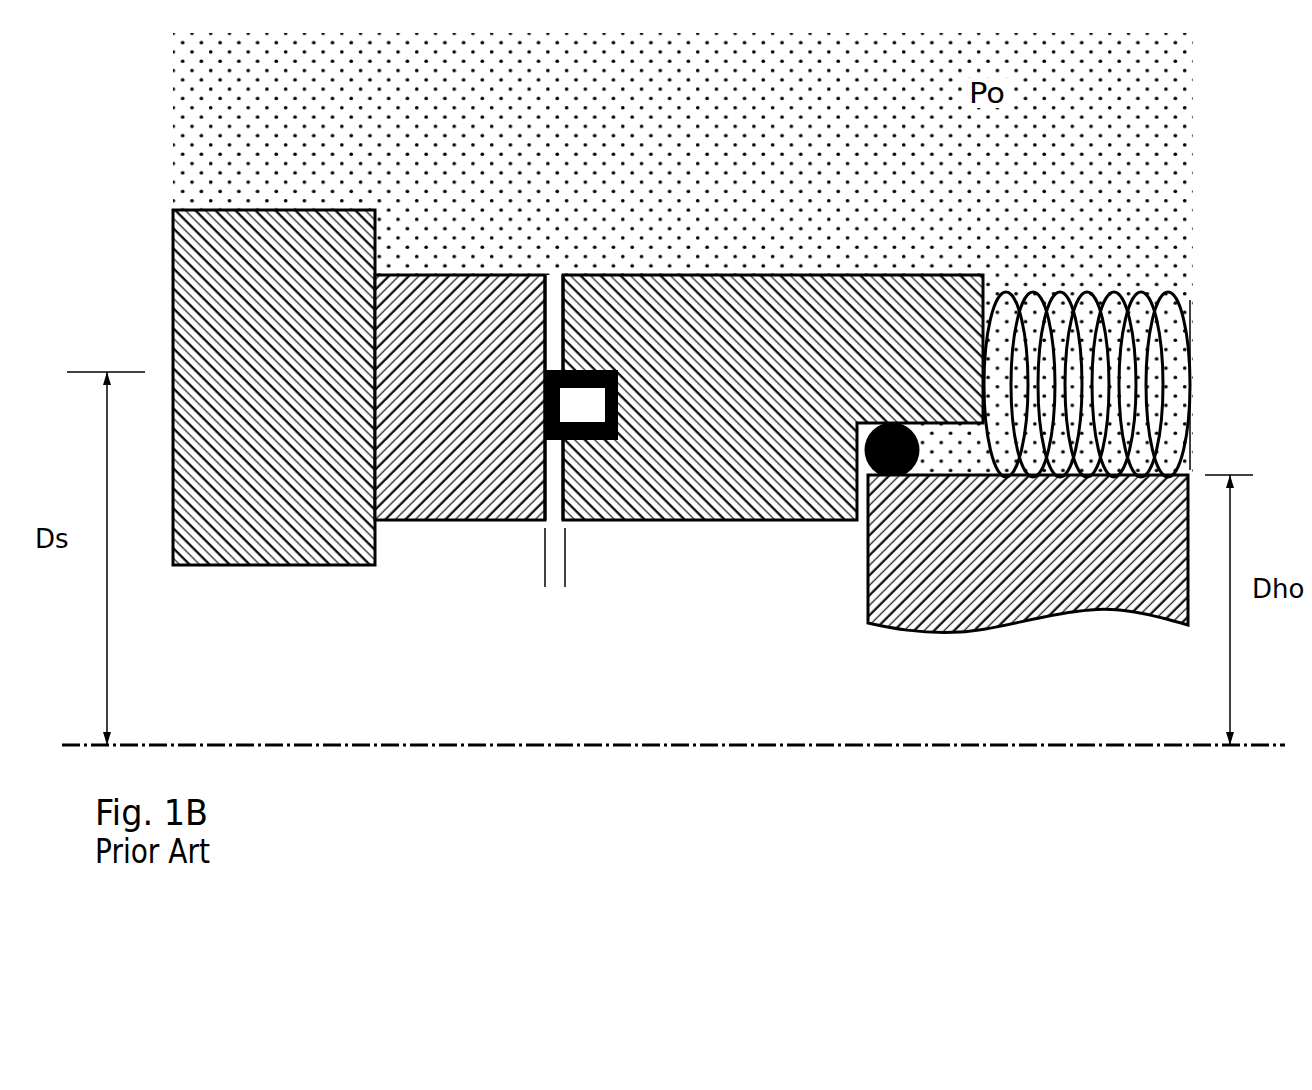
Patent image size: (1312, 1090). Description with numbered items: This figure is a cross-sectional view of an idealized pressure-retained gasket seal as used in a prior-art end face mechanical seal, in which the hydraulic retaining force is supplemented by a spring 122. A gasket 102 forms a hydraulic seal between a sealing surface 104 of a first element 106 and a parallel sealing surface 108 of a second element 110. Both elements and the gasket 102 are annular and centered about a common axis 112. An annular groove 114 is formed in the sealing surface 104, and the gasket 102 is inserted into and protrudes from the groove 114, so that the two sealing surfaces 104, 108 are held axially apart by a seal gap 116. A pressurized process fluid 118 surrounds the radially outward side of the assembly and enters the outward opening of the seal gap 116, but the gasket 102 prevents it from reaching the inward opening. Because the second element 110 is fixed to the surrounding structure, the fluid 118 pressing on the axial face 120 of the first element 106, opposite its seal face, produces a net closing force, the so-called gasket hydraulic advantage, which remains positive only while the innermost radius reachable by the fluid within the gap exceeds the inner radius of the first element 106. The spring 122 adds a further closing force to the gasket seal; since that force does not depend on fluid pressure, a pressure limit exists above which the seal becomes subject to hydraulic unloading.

The gasket 102 is at (601, 416).
The sealing surface 104 is at (565, 322).
The first element 106 is at (759, 450).
The sealing surface 108 is at (545, 322).
The second element 110 is at (473, 464).
The common axis 112 is at (648, 742).
The annular groove 114 is at (624, 400).
The seal gap 116 is at (507, 575).
The process fluid 118 is at (650, 104).
The axial face 120 is at (985, 283).
The spring 122 is at (1191, 357).